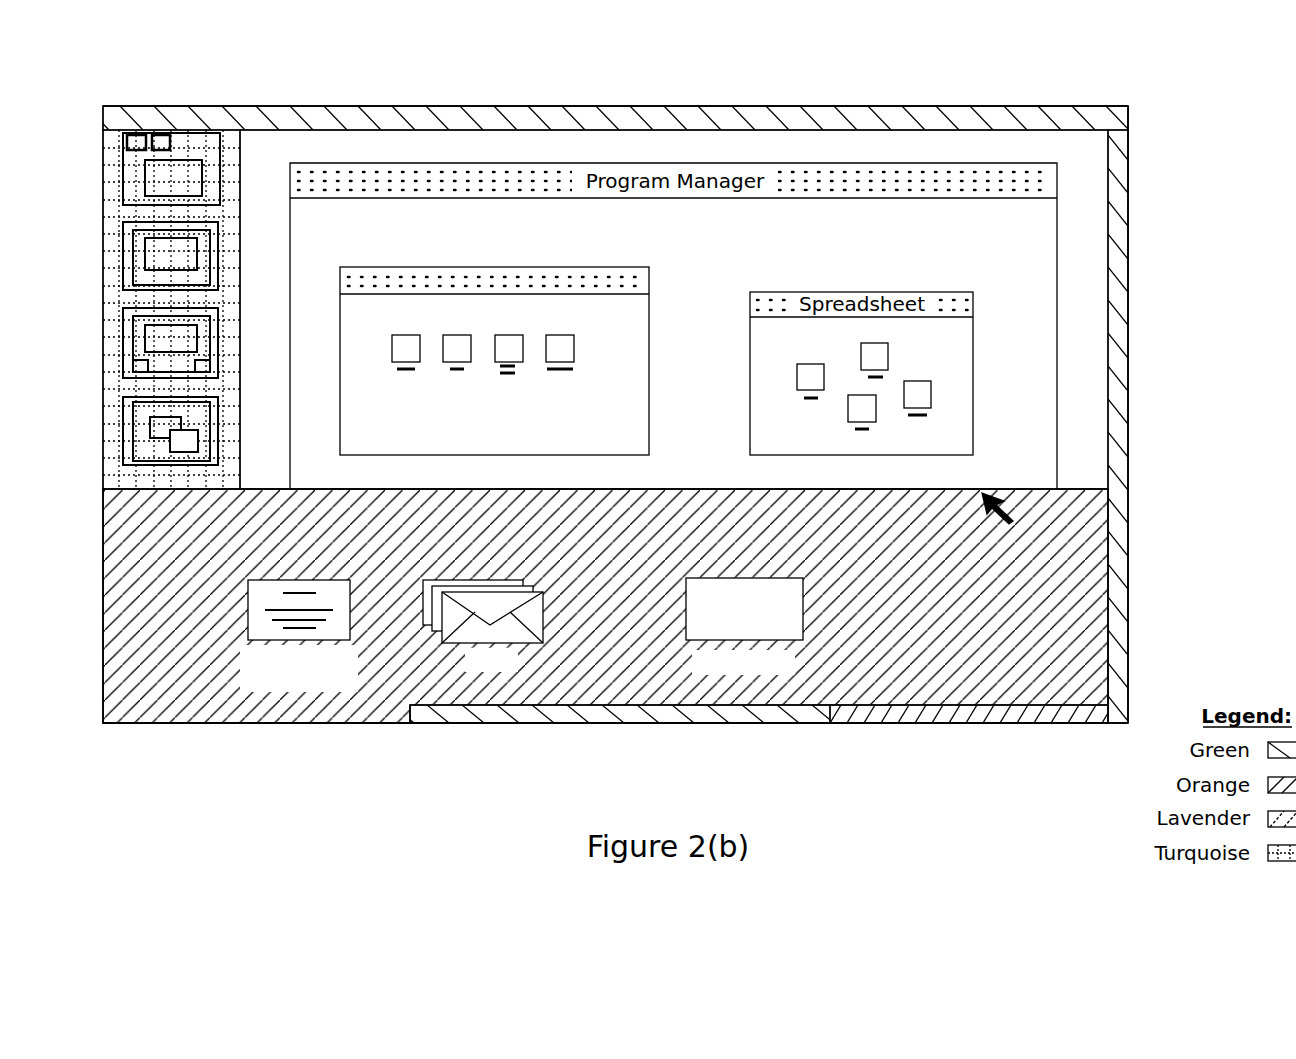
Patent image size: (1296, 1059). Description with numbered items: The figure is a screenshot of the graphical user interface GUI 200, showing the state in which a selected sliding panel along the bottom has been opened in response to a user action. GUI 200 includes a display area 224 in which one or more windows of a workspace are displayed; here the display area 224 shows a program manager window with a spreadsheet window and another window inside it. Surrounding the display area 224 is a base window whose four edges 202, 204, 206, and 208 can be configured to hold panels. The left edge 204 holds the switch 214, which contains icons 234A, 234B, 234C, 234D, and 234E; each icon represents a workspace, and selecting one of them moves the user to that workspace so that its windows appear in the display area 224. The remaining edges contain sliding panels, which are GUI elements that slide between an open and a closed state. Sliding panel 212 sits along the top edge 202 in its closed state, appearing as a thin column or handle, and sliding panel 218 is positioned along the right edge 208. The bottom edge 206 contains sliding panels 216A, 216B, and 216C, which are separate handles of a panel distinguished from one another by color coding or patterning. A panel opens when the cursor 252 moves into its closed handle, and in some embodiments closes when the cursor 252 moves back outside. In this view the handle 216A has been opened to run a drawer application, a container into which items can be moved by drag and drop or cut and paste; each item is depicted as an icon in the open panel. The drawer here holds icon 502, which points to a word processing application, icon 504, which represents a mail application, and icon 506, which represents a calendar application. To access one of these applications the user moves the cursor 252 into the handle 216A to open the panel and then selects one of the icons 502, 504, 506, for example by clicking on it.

The GUI 200 is at (1057, 55).
The edge 202 is at (447, 107).
The edge 204 is at (103, 131).
The edge 206 is at (148, 725).
The edge 208 is at (1128, 135).
The sliding panel 212 is at (617, 114).
The switch 214 is at (103, 650).
The sliding panel 216A is at (226, 712).
The sliding panel 216B is at (558, 713).
The sliding panel 216C is at (990, 713).
The sliding panel 218 is at (1118, 268).
The display area 224 is at (341, 148).
The icon 234A is at (120, 178).
The icon 234B is at (120, 260).
The icon 234C is at (120, 347).
The icon 234D is at (120, 435).
The icon 234E is at (103, 548).
The cursor 252 is at (1010, 512).
The icon 502 is at (340, 642).
The icon 504 is at (452, 645).
The icon 506 is at (793, 643).